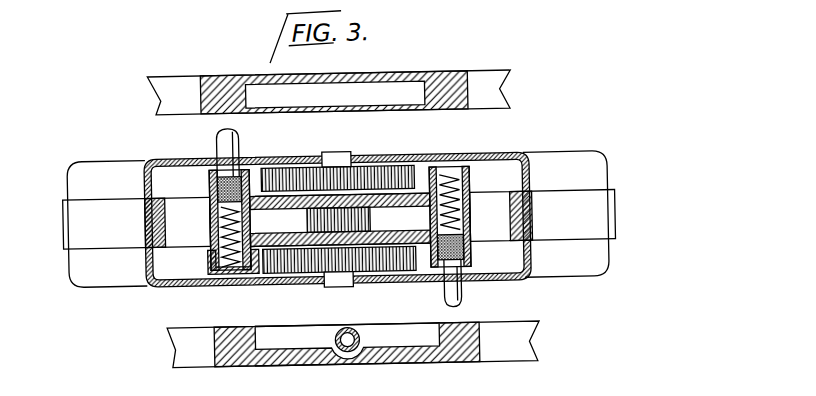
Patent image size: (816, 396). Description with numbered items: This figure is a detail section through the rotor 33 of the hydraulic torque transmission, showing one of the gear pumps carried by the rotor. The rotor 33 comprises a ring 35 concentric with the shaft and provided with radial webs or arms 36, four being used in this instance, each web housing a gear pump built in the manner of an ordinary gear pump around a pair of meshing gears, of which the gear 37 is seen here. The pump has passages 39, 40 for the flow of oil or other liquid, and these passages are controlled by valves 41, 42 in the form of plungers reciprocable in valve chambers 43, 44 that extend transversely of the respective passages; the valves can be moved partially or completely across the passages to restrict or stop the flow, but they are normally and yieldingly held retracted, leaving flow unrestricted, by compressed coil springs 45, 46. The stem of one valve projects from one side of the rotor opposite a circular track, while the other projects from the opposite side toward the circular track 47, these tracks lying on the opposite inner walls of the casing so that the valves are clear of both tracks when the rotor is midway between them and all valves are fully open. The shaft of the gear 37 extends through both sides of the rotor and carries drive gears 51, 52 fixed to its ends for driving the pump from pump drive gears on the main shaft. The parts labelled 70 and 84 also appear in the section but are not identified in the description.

The rotor 33 is at (533, 162).
The ring 35 is at (521, 252).
The radial webs or arms 36 is at (383, 194).
The gear 37 is at (316, 236).
The passage 39 is at (407, 222).
The passage 40 is at (288, 227).
The valve 41 is at (462, 294).
The valve 42 is at (250, 168).
The valve chamber 43 is at (468, 168).
The valve chamber 44 is at (209, 256).
The coil spring 45 is at (212, 216).
The coil spring 46 is at (222, 90).
The circular track 47 is at (250, 326).
The drive gear 51 is at (360, 286).
The drive gear 52 is at (312, 176).
The shaft 70 is at (602, 223).
The ball detent 84 is at (348, 348).